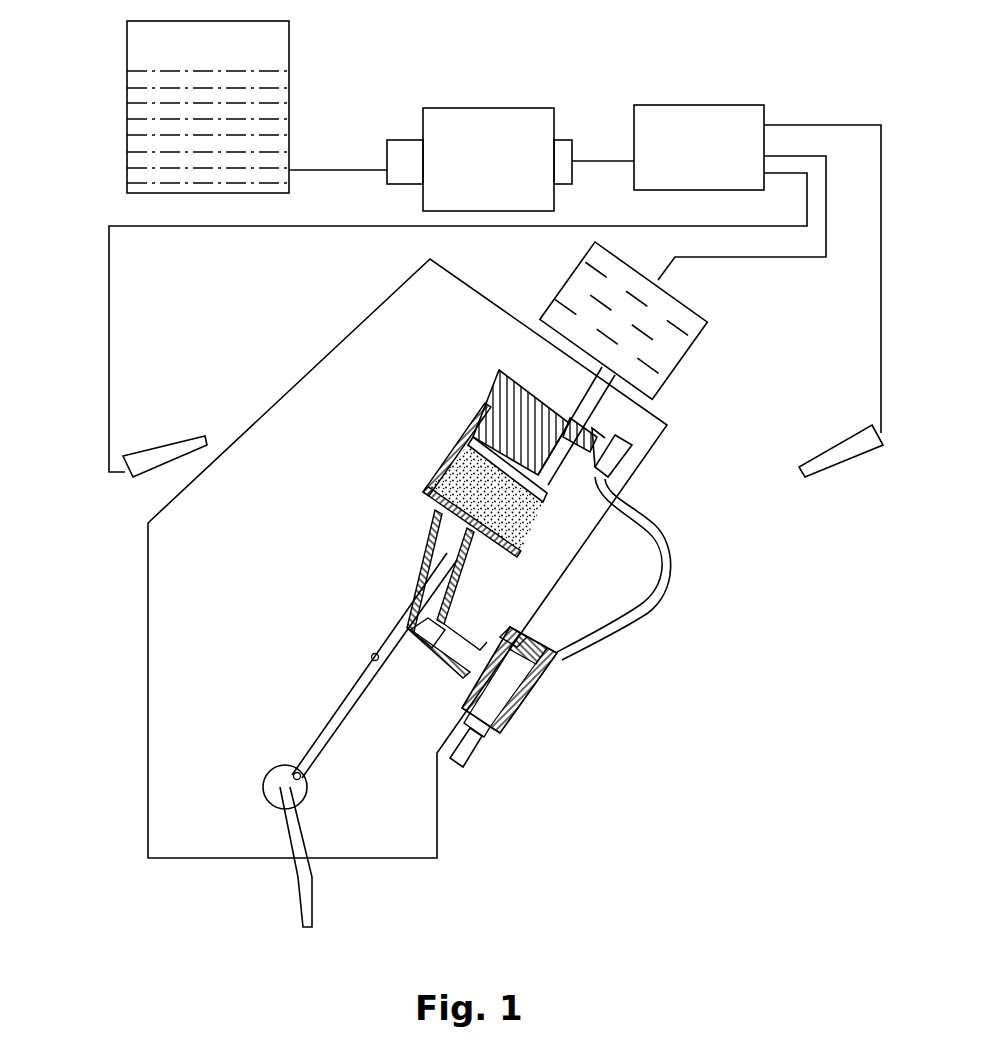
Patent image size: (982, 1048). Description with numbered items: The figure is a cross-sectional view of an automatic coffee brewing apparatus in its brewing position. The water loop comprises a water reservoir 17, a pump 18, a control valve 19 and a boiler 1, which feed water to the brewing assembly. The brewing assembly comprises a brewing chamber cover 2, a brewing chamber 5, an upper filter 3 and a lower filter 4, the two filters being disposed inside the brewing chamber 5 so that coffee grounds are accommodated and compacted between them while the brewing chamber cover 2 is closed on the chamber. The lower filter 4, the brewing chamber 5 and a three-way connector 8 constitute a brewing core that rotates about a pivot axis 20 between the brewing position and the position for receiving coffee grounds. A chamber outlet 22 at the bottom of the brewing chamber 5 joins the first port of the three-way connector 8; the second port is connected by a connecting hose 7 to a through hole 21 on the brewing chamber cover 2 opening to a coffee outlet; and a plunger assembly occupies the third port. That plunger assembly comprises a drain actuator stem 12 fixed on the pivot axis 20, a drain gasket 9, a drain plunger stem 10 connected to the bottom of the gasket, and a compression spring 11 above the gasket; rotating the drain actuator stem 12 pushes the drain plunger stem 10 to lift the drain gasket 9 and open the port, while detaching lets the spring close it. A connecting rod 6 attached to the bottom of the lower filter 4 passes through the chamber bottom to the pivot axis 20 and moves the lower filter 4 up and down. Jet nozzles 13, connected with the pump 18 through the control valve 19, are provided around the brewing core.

The boiler 1 is at (703, 313).
The brewing chamber cover 2 is at (593, 429).
The upper filter 3 is at (545, 486).
The lower filter 4 is at (540, 525).
The brewing chamber 5 is at (478, 528).
The connecting rod 6 is at (470, 580).
The connecting hose 7 is at (445, 572).
The three-way connector 8 is at (530, 700).
The drain gasket 9 is at (497, 727).
The drain plunger stem 10 is at (470, 752).
The compression spring 11 is at (462, 710).
The drain actuator stem 12 is at (308, 893).
The jet nozzle 13 is at (161, 460).
The water reservoir 17 is at (137, 55).
The pump 18 is at (450, 120).
The control valve 19 is at (655, 110).
The pivot axis 20 is at (282, 790).
The through hole 21 is at (627, 438).
The chamber outlet 22 is at (428, 635).